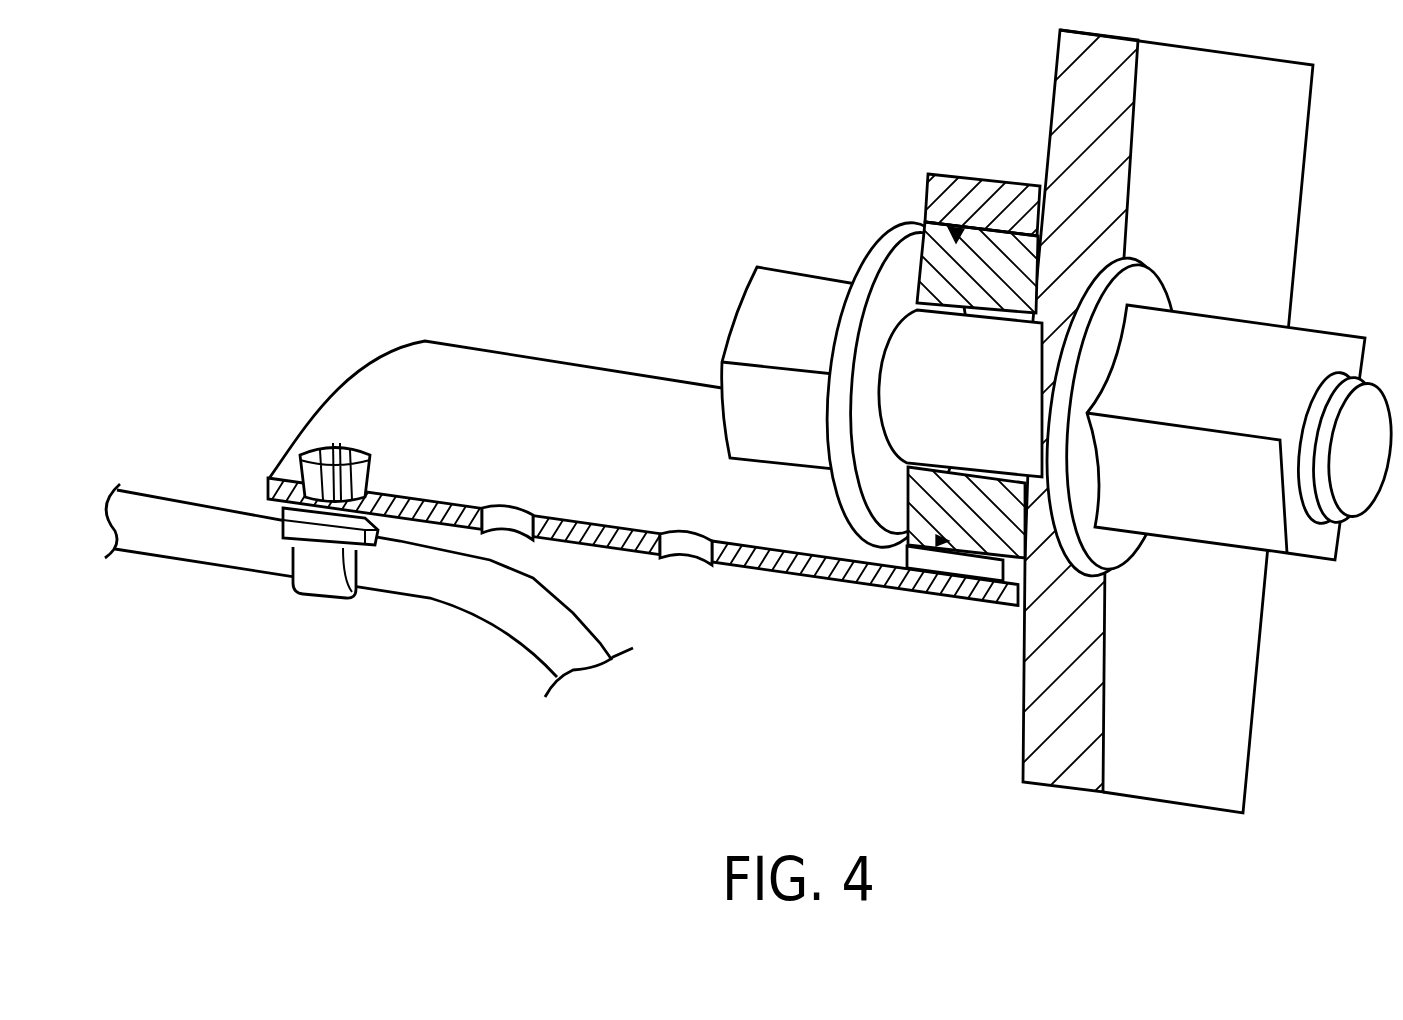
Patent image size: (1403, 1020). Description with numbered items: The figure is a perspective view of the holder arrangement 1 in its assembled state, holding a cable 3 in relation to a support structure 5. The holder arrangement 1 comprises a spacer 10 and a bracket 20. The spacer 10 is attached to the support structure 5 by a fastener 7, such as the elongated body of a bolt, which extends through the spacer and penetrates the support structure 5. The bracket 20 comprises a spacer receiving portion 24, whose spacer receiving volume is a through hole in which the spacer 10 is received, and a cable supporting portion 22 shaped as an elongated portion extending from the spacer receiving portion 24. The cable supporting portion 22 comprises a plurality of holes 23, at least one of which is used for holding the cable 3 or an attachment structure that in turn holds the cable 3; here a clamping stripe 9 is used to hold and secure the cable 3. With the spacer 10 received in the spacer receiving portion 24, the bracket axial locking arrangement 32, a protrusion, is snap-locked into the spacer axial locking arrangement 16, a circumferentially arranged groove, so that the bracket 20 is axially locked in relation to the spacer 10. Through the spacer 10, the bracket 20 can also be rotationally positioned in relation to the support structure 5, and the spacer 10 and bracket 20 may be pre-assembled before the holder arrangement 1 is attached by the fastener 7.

The holder arrangement 1 is at (754, 419).
The cable 3 is at (211, 540).
The support structure 5 is at (1102, 108).
The fastener 7 is at (780, 313).
The clamping stripe 9 is at (320, 568).
The spacer 10 is at (943, 261).
The spacer axial locking arrangement 16 is at (953, 226).
The bracket 20 is at (934, 194).
The cable supporting portion 22 is at (468, 430).
The holes 23 is at (643, 488).
The spacer receiving portion 24 is at (992, 540).
The bracket axial locking arrangement 32 is at (952, 548).